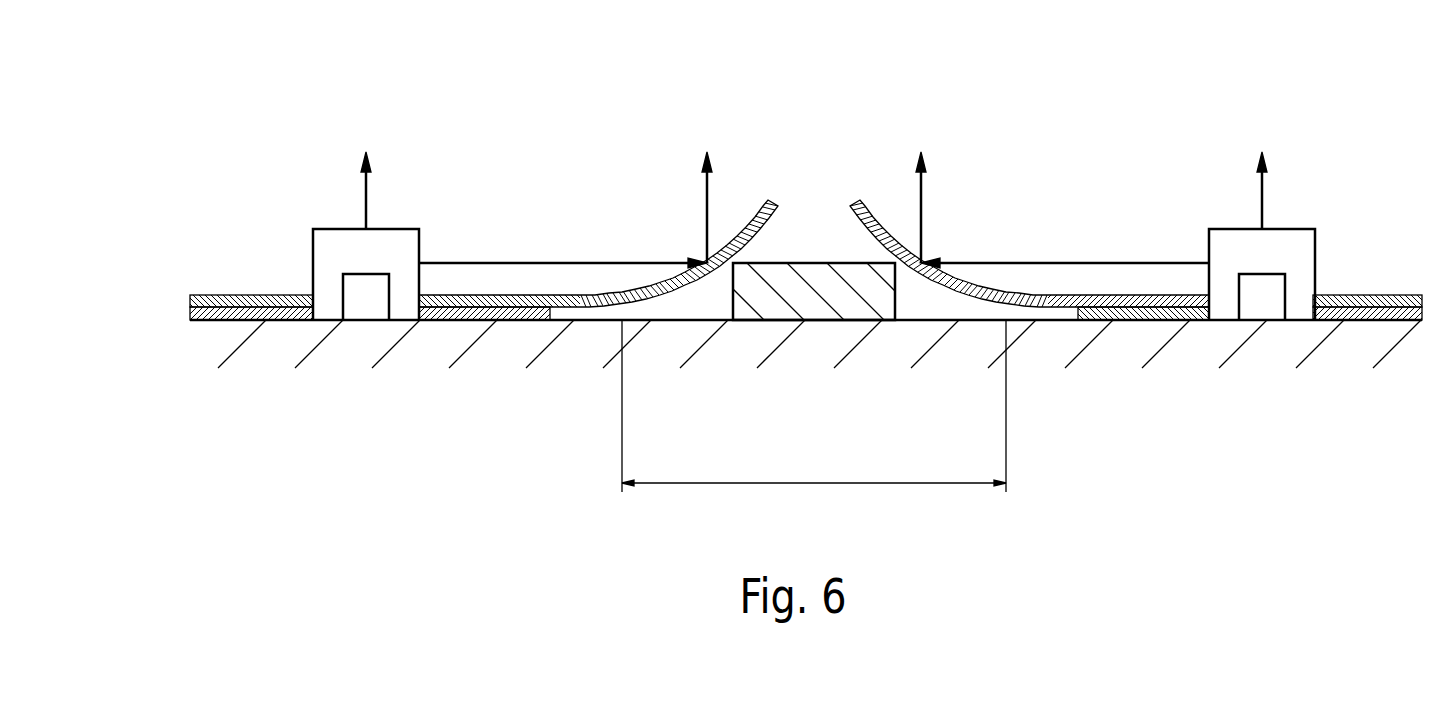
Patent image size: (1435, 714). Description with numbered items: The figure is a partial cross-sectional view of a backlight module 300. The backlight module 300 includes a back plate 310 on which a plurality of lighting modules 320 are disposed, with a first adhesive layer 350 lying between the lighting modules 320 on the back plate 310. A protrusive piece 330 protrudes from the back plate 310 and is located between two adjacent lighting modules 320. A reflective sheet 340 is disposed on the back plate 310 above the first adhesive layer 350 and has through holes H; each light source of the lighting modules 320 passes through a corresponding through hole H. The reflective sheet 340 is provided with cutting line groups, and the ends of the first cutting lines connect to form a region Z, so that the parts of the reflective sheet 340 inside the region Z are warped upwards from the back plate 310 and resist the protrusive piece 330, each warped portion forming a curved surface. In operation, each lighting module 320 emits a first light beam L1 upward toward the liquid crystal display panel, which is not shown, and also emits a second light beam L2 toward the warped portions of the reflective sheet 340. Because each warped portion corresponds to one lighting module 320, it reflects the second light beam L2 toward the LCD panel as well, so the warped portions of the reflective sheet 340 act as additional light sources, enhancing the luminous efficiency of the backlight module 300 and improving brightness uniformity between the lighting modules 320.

The backlight module 300 is at (162, 75).
The back plate 310 is at (1240, 345).
The lighting module 320 is at (1287, 242).
The protrusive piece 330 is at (810, 302).
The reflective sheet 340 is at (1043, 293).
The first adhesive layer 350 is at (515, 322).
The first light beam L1 is at (367, 202).
The second light beam L2 is at (545, 263).
The through hole H is at (1322, 288).
The region Z is at (925, 492).